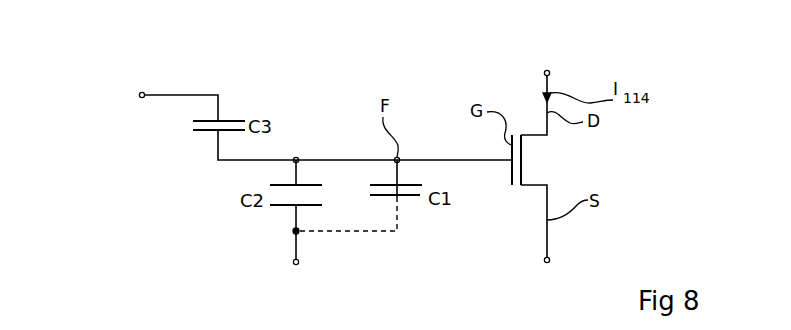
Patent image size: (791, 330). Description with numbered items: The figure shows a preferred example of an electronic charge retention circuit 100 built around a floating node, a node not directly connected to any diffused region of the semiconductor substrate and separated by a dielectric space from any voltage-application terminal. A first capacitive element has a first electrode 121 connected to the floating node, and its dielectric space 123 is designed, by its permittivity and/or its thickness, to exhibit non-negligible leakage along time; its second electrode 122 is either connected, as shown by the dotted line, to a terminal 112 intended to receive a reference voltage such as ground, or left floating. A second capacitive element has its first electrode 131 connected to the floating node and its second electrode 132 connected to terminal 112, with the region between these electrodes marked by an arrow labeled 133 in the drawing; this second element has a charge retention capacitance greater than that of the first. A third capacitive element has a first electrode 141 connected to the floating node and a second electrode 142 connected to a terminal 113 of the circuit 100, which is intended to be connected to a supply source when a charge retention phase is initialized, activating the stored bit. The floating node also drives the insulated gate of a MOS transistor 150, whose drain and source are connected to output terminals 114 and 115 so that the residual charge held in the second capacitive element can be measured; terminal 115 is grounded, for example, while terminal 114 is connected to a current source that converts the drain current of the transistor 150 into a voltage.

The charge retention circuit 100 is at (155, 220).
The terminal 112 is at (298, 263).
The terminal 113 is at (142, 92).
The output terminal 114 is at (550, 73).
The output terminal 115 is at (550, 260).
The first electrode 121 is at (415, 185).
The second electrode 122 is at (405, 197).
The dielectric space 123 is at (413, 196).
The first electrode 131 is at (287, 184).
The second electrode 132 is at (282, 208).
The dielectric of capacitor C2 133 is at (303, 195).
The first electrode 141 is at (204, 132).
The second electrode 142 is at (233, 119).
The MOS transistor 150 is at (538, 157).